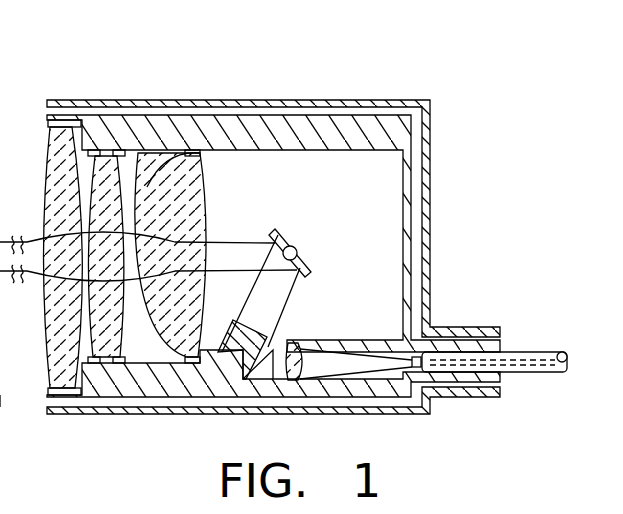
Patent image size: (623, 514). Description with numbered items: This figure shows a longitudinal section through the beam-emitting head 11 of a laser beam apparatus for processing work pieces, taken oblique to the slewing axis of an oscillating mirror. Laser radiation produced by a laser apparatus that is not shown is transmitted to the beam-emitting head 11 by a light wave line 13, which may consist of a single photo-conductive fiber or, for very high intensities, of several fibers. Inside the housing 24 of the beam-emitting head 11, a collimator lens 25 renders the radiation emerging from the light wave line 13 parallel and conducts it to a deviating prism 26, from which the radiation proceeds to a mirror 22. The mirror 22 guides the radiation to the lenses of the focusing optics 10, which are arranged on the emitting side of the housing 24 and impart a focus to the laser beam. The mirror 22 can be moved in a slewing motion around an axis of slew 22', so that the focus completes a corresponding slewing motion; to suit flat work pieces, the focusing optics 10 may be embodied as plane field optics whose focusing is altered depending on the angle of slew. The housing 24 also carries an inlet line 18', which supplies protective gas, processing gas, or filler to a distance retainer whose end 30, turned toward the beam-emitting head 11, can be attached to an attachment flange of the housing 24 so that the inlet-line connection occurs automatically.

The focusing optics 10 is at (155, 187).
The beam-emitting head 11 is at (440, 180).
The light wave line 13 is at (515, 352).
The inlet line 18' is at (273, 232).
The mirror 22 is at (294, 271).
The axis of slew 22' is at (317, 248).
The housing 24 is at (333, 122).
The collimator lens 25 is at (298, 358).
The deviating prism 26 is at (218, 352).
The end of the distance retainer 30 is at (3, 419).